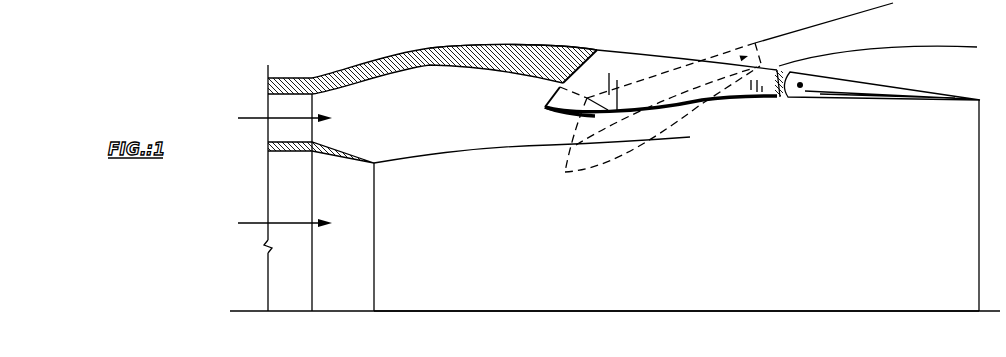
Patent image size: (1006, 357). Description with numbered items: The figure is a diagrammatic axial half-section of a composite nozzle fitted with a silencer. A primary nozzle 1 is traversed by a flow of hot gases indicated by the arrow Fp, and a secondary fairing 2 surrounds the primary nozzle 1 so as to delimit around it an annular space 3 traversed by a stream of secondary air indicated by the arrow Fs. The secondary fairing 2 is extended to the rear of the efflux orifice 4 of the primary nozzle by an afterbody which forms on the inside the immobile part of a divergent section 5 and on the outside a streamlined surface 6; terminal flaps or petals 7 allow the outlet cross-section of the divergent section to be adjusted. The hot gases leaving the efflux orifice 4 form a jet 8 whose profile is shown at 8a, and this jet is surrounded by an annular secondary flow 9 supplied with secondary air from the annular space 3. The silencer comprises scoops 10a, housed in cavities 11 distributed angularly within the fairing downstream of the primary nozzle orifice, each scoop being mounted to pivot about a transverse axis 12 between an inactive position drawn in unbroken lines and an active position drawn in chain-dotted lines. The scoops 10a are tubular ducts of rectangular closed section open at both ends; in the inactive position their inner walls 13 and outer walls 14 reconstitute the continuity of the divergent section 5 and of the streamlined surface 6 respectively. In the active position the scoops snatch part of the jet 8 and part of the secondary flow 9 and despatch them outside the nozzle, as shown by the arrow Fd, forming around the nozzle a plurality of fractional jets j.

The primary nozzle 1 is at (268, 155).
The secondary fairing 2 is at (318, 60).
The annular space 3 is at (287, 100).
The efflux orifice 4 is at (375, 250).
The divergent section 5 is at (752, 100).
The streamlined surface 6 is at (553, 46).
The terminal flaps or petals 7 is at (843, 90).
The jet 8 is at (503, 248).
The jet profile 8a is at (420, 152).
The annular secondary flow 9 is at (390, 120).
The scoop 10a is at (556, 96).
The cavity 11 is at (597, 50).
The transverse axis 12 is at (700, 102).
The inner wall 13 is at (558, 114).
The outer wall 14 is at (654, 56).
The secondary air stream arrow Fs is at (272, 110).
The hot gas flow arrow Fp is at (270, 223).
The diverted flow arrow Fd is at (657, 101).
The fractional jets j is at (884, 44).